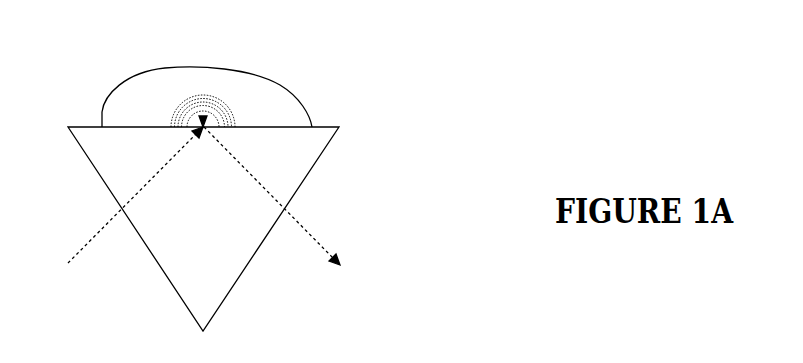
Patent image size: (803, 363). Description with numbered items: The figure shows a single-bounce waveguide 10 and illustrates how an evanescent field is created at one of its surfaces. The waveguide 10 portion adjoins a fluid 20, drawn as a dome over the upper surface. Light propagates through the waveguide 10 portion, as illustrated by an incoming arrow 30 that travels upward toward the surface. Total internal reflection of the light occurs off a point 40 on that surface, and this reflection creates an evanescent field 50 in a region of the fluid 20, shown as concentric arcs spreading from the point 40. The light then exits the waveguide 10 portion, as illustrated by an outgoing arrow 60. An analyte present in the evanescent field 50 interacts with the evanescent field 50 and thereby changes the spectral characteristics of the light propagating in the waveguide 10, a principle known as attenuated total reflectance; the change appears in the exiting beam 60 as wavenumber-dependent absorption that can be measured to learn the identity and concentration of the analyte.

The single-bounce waveguide 10 is at (213, 241).
The fluid 20 is at (162, 68).
The incoming arrow 30 is at (92, 238).
The point 40 is at (203, 118).
The evanescent field 50 is at (232, 110).
The outgoing arrow 60 is at (318, 238).